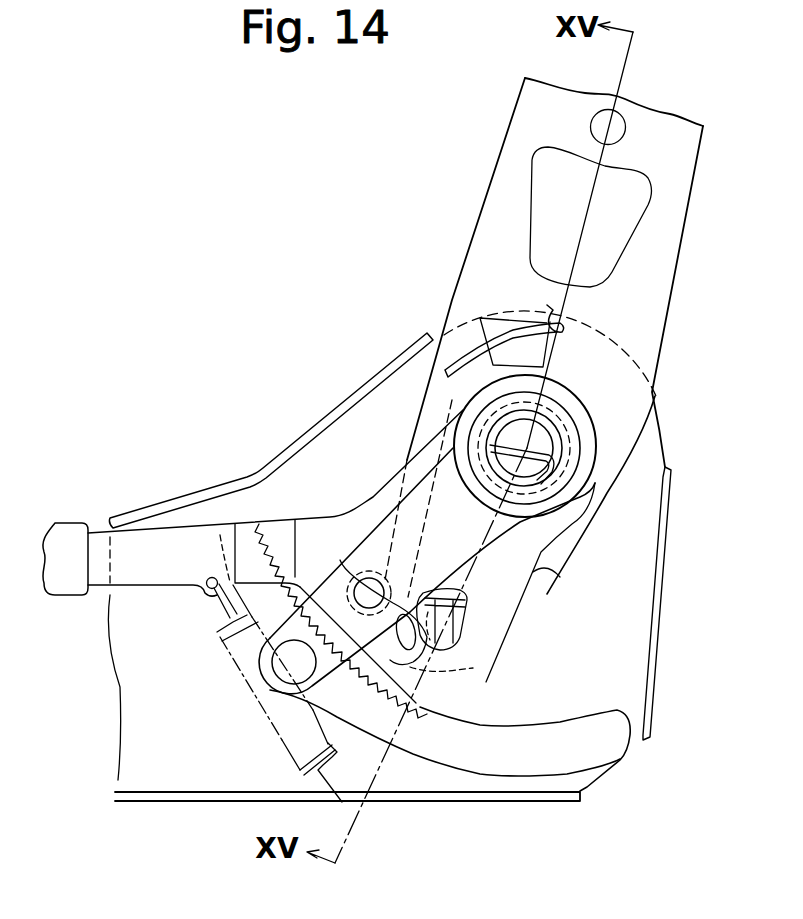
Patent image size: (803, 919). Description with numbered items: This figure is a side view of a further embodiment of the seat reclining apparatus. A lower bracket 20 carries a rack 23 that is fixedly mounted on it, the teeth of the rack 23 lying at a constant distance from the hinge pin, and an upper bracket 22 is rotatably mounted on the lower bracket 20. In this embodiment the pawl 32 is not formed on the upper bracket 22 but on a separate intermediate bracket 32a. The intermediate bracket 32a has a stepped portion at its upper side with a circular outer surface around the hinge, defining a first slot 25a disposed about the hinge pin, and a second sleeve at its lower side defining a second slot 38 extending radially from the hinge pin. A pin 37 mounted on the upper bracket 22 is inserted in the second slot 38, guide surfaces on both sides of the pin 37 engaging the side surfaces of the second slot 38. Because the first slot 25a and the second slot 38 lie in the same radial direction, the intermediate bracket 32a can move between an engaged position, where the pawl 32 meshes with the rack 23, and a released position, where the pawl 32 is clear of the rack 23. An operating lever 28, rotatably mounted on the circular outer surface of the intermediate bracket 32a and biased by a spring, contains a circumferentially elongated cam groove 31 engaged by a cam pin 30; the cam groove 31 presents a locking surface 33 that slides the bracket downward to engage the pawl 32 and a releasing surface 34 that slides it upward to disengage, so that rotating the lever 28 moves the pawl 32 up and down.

The lower bracket 20 is at (532, 805).
The upper bracket 22 is at (676, 283).
The rack 23 is at (602, 745).
The first slot 25a is at (560, 445).
The operating lever 28 is at (343, 520).
The cam pin 30 is at (379, 578).
The cam groove 31 is at (373, 680).
The pawl 32 is at (418, 703).
The intermediate bracket 32a is at (547, 594).
The locking surface 33 is at (358, 578).
The releasing surface 34 is at (445, 593).
The pin 37 is at (453, 627).
The second slot 38 is at (473, 668).